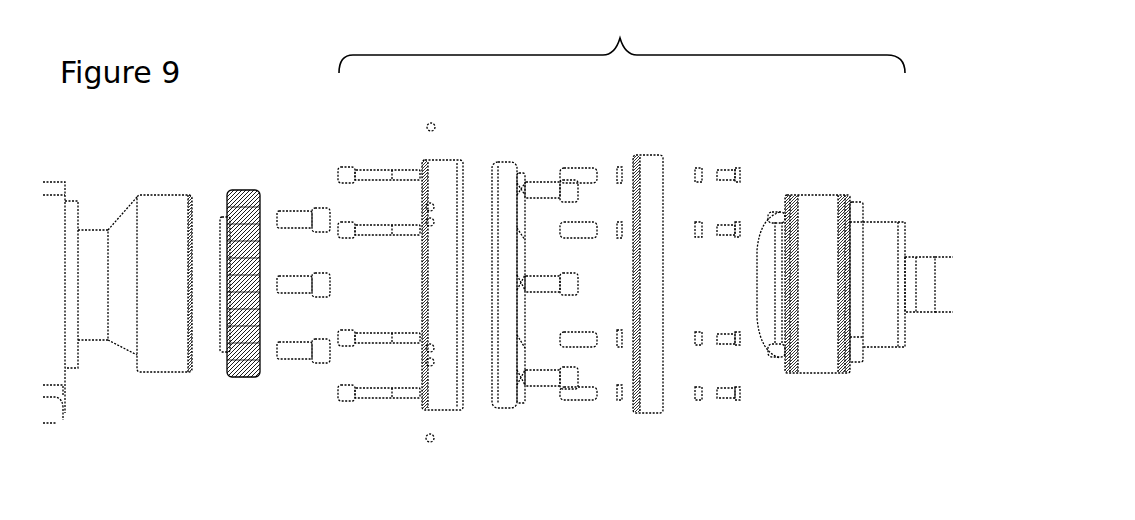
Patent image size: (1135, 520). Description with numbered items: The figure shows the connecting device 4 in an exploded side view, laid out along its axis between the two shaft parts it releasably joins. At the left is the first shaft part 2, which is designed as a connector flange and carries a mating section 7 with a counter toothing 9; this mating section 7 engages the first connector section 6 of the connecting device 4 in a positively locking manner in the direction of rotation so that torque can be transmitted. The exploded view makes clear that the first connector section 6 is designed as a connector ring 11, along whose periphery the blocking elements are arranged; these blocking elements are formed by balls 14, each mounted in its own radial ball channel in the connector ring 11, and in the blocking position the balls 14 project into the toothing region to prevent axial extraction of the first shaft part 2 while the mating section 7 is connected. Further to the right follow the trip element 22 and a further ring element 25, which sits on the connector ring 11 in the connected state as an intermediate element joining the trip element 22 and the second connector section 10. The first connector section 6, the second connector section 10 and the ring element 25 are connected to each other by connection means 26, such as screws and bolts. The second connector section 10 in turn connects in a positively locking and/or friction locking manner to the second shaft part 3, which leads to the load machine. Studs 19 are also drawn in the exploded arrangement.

The first shaft part 2 is at (180, 397).
The second shaft part 3 is at (938, 268).
The connecting device 4 is at (622, 42).
The first connector section 6 is at (443, 168).
The mating section 7 is at (248, 184).
The counter toothing 9 is at (243, 355).
The second connector section 10 is at (881, 337).
The connector ring 11 is at (447, 397).
The balls 14 is at (430, 443).
The studs 19 is at (362, 230).
The trip element 22 is at (652, 403).
The ring element 25 is at (510, 395).
The connection means 26 is at (582, 172).